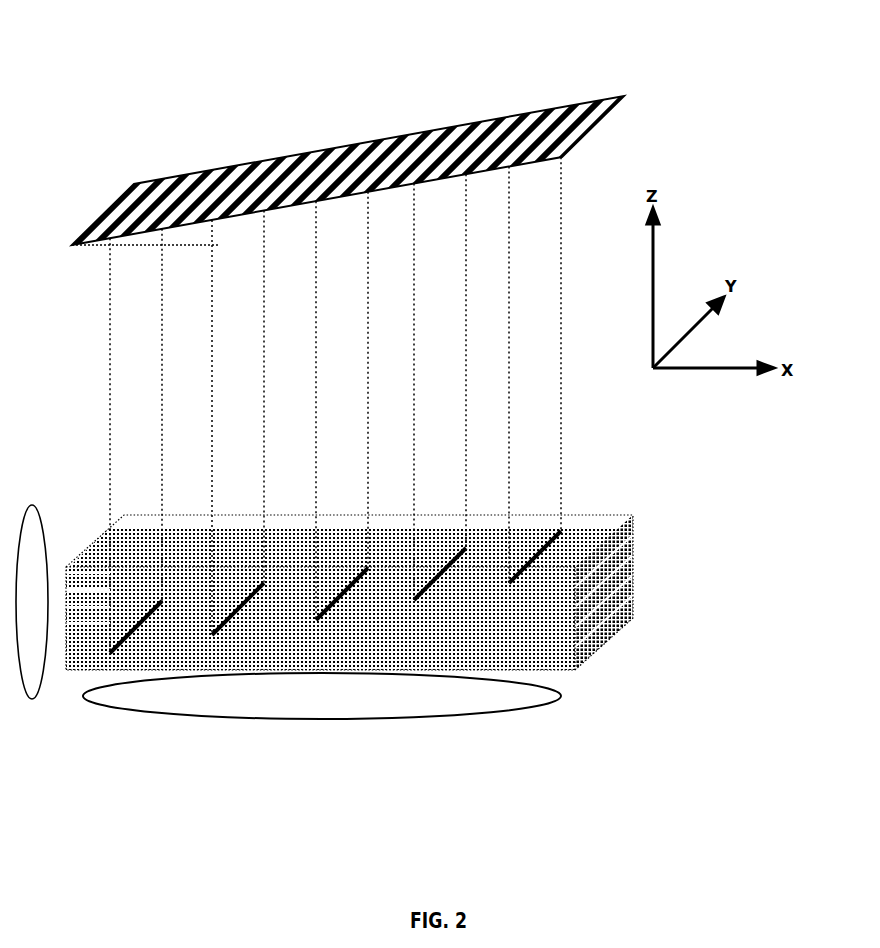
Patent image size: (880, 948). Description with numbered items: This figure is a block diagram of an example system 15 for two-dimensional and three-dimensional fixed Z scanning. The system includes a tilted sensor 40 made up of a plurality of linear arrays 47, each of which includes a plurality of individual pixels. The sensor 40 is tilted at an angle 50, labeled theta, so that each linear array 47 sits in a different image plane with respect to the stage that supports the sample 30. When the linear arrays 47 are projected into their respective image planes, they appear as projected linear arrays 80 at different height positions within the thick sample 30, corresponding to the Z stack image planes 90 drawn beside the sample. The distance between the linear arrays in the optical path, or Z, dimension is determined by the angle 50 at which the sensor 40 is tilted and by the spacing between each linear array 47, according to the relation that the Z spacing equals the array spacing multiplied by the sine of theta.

The system for 2D and 3D fixed Z scanning 15 is at (690, 48).
The tilted sensor 40 is at (425, 180).
The linear arrays 47 is at (547, 87).
The angle 50 is at (228, 239).
The sample 30 is at (460, 592).
The projected linear arrays 80 is at (540, 557).
The Z stack image planes 90 is at (34, 698).